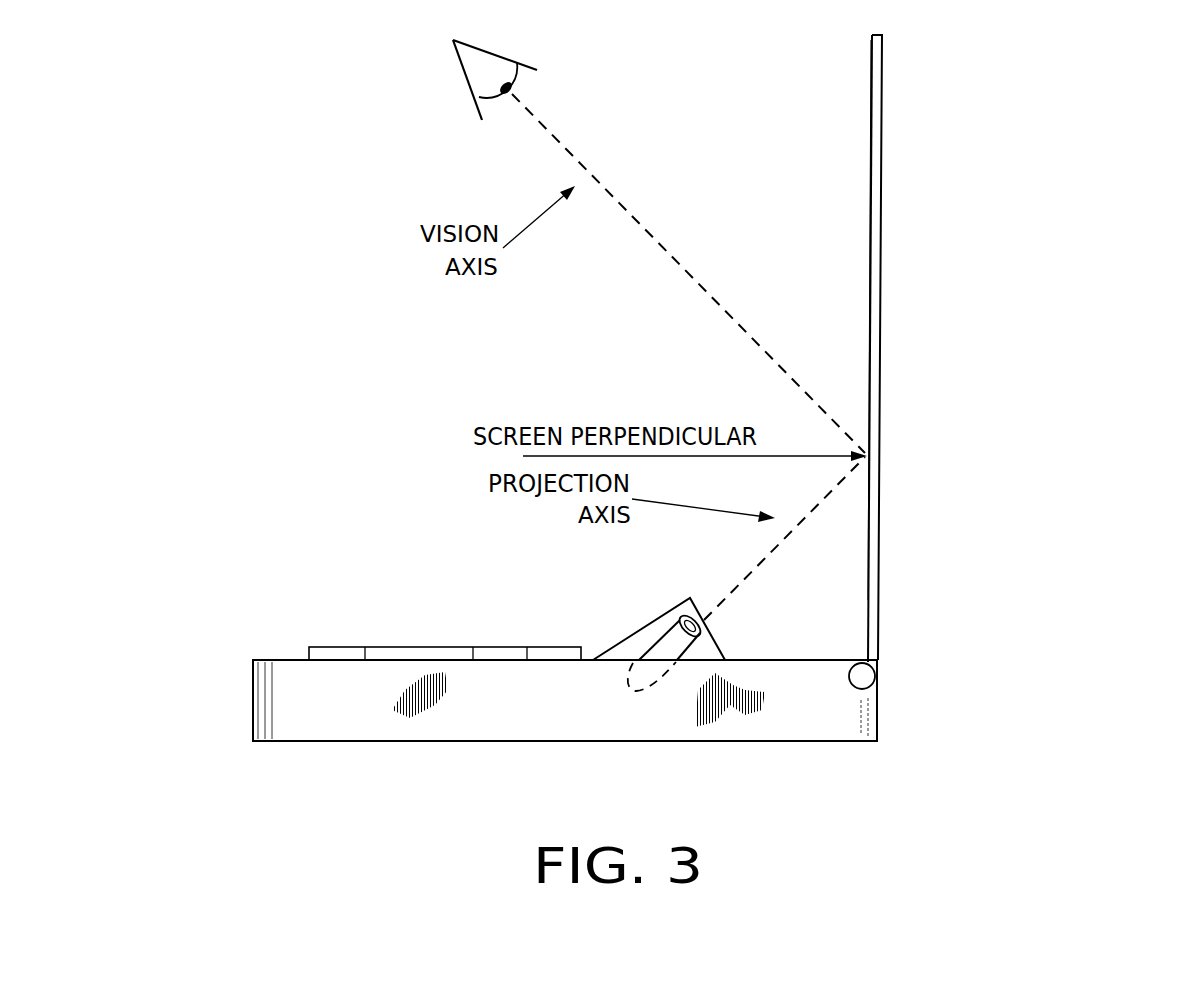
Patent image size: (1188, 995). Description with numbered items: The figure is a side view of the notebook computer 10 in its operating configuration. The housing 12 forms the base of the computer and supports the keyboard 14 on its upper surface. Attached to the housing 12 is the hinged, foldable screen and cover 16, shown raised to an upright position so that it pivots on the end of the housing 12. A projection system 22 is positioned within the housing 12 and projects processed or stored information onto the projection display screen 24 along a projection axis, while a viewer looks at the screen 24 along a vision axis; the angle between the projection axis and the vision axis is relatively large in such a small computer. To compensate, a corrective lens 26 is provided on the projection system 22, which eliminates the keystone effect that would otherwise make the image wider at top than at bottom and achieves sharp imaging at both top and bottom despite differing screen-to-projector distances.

The notebook computer 10 is at (1070, 135).
The housing 12 is at (527, 700).
The keyboard 14 is at (409, 631).
The hinged foldable screen and cover 16 is at (923, 348).
The projection system 22 is at (743, 639).
The projection display screen 24 is at (790, 320).
The corrective lens 26 is at (654, 629).